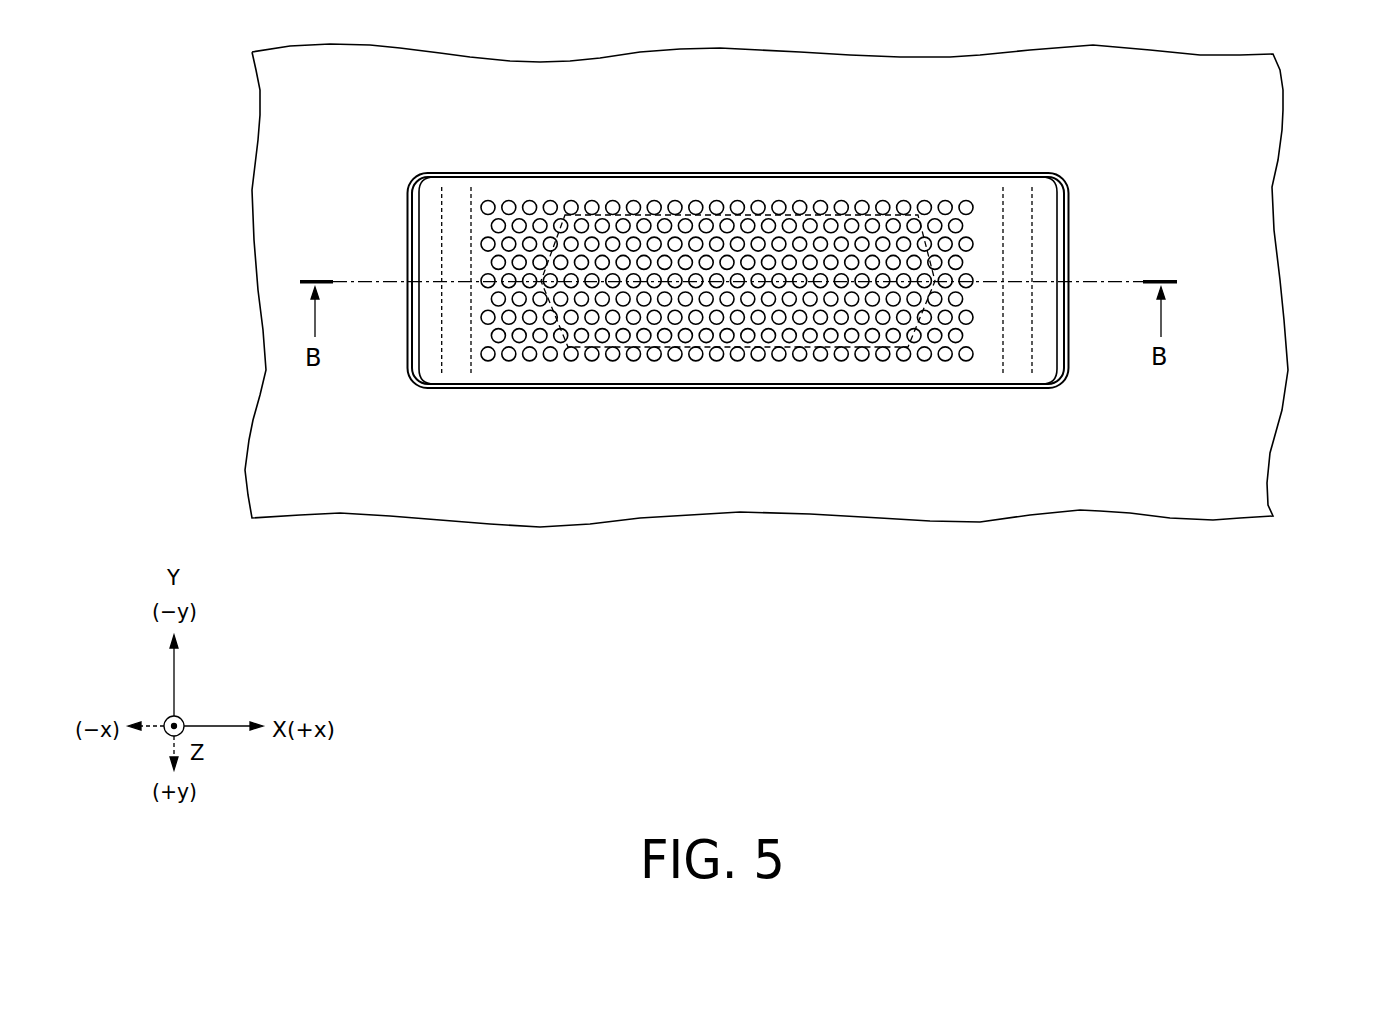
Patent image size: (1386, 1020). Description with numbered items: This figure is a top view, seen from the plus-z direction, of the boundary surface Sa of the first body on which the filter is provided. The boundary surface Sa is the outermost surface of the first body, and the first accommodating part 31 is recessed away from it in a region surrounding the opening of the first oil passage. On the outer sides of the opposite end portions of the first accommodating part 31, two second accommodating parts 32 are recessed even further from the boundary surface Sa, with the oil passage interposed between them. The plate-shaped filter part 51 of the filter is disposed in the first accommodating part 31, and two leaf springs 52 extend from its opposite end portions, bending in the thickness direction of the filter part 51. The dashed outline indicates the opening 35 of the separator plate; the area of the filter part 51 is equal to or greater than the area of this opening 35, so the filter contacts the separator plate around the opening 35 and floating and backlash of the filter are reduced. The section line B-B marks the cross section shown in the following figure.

The first accommodating part 31 is at (692, 174).
The second accommodating part 32 is at (412, 185).
The opening 35 is at (826, 350).
The filter part 51 is at (713, 376).
The leaf spring 52 is at (457, 373).
The boundary surface Sa is at (1228, 452).